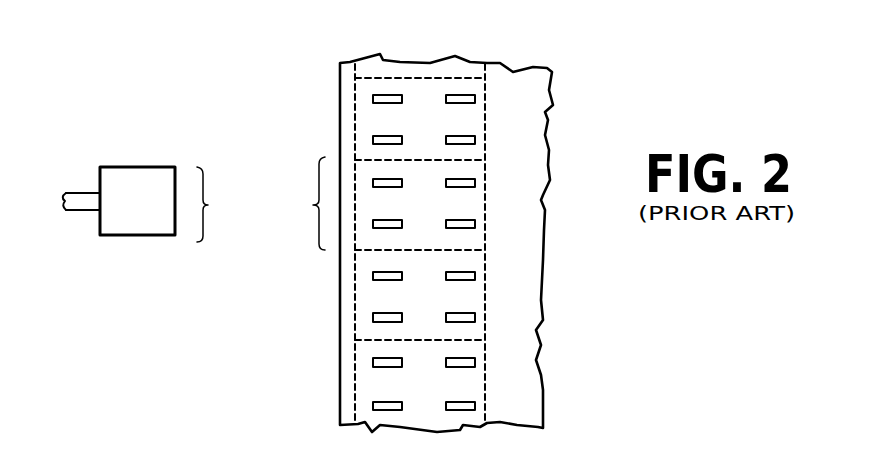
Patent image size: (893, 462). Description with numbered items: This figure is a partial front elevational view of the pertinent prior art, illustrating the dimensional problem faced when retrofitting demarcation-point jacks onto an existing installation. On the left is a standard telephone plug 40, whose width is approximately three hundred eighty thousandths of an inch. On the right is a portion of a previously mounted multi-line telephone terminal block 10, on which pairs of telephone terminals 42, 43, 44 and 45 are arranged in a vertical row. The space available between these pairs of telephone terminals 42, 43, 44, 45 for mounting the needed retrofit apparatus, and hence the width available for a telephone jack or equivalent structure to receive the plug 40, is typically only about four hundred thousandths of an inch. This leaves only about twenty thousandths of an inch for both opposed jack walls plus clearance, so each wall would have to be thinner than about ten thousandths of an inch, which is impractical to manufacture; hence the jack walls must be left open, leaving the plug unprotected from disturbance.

The multi-line telephone terminal block 10 is at (340, 112).
The RJ-11 telephone plug 40 is at (147, 167).
The telephone terminal pair 42 is at (490, 93).
The telephone terminal pair 43 is at (490, 178).
The telephone terminal pair 44 is at (490, 273).
The telephone terminal pair 45 is at (490, 357).